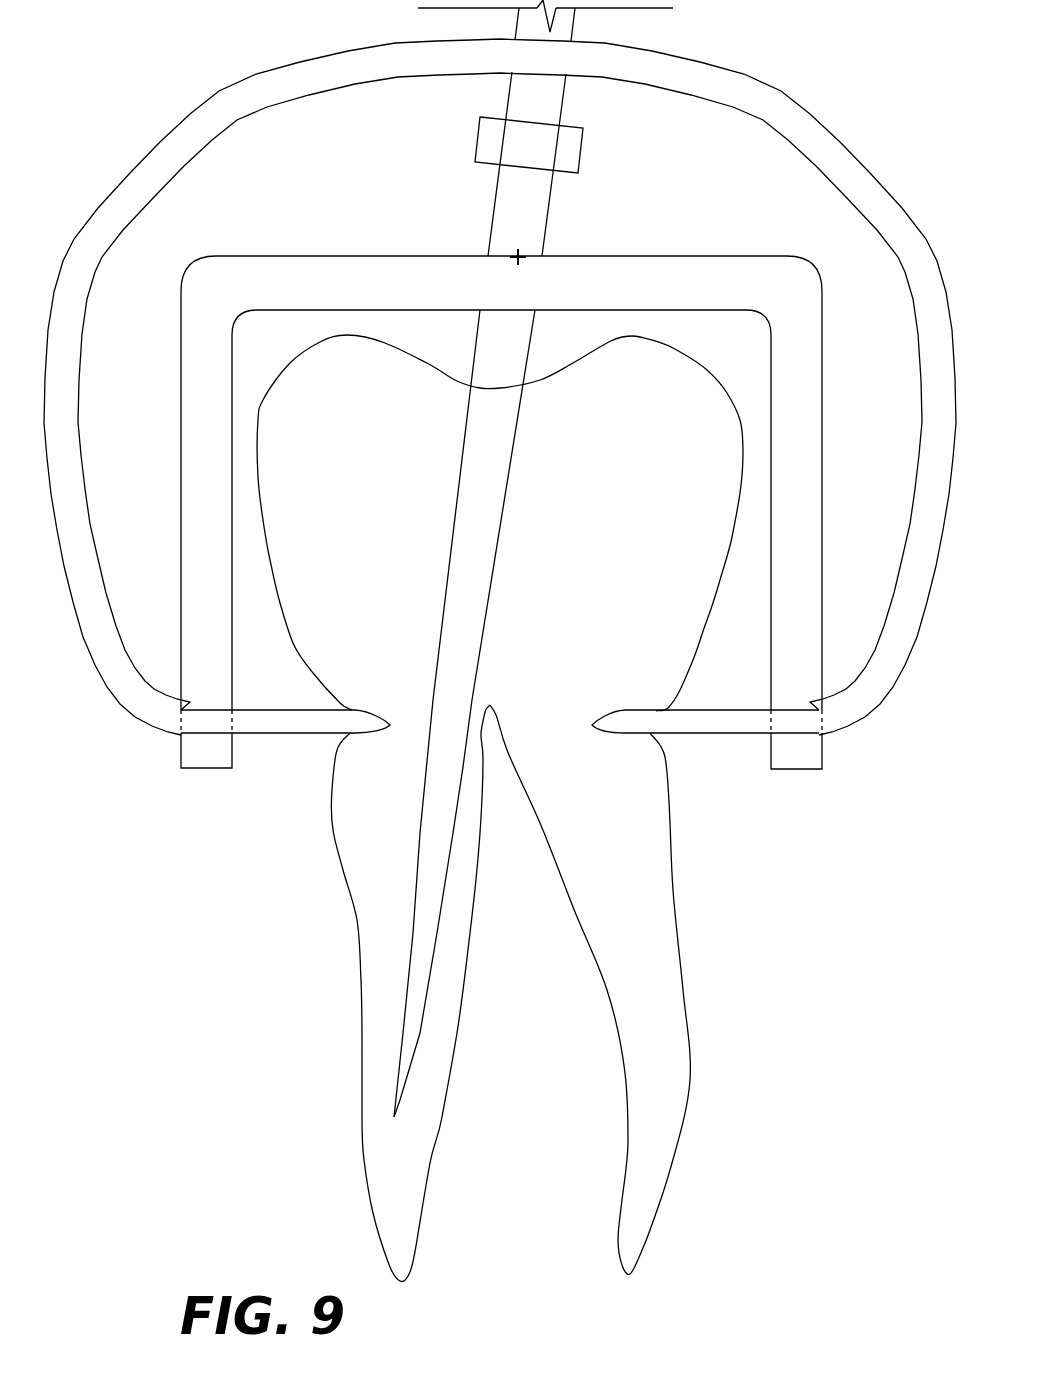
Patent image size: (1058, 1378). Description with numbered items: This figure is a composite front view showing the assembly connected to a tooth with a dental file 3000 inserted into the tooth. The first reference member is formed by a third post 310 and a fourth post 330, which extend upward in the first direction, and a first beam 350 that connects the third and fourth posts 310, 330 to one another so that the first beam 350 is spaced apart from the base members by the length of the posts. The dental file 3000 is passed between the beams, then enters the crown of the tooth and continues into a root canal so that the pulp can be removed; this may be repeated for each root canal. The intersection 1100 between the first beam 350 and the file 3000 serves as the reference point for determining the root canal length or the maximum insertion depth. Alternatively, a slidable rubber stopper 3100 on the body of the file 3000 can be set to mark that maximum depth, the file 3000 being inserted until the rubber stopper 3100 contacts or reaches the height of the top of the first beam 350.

The first beam 350 is at (390, 256).
The fourth post 330 is at (181, 472).
The third post 310 is at (822, 466).
The dental file 3000 is at (424, 790).
The rubber stopper 3100 is at (584, 142).
The intersection 1100 is at (522, 256).